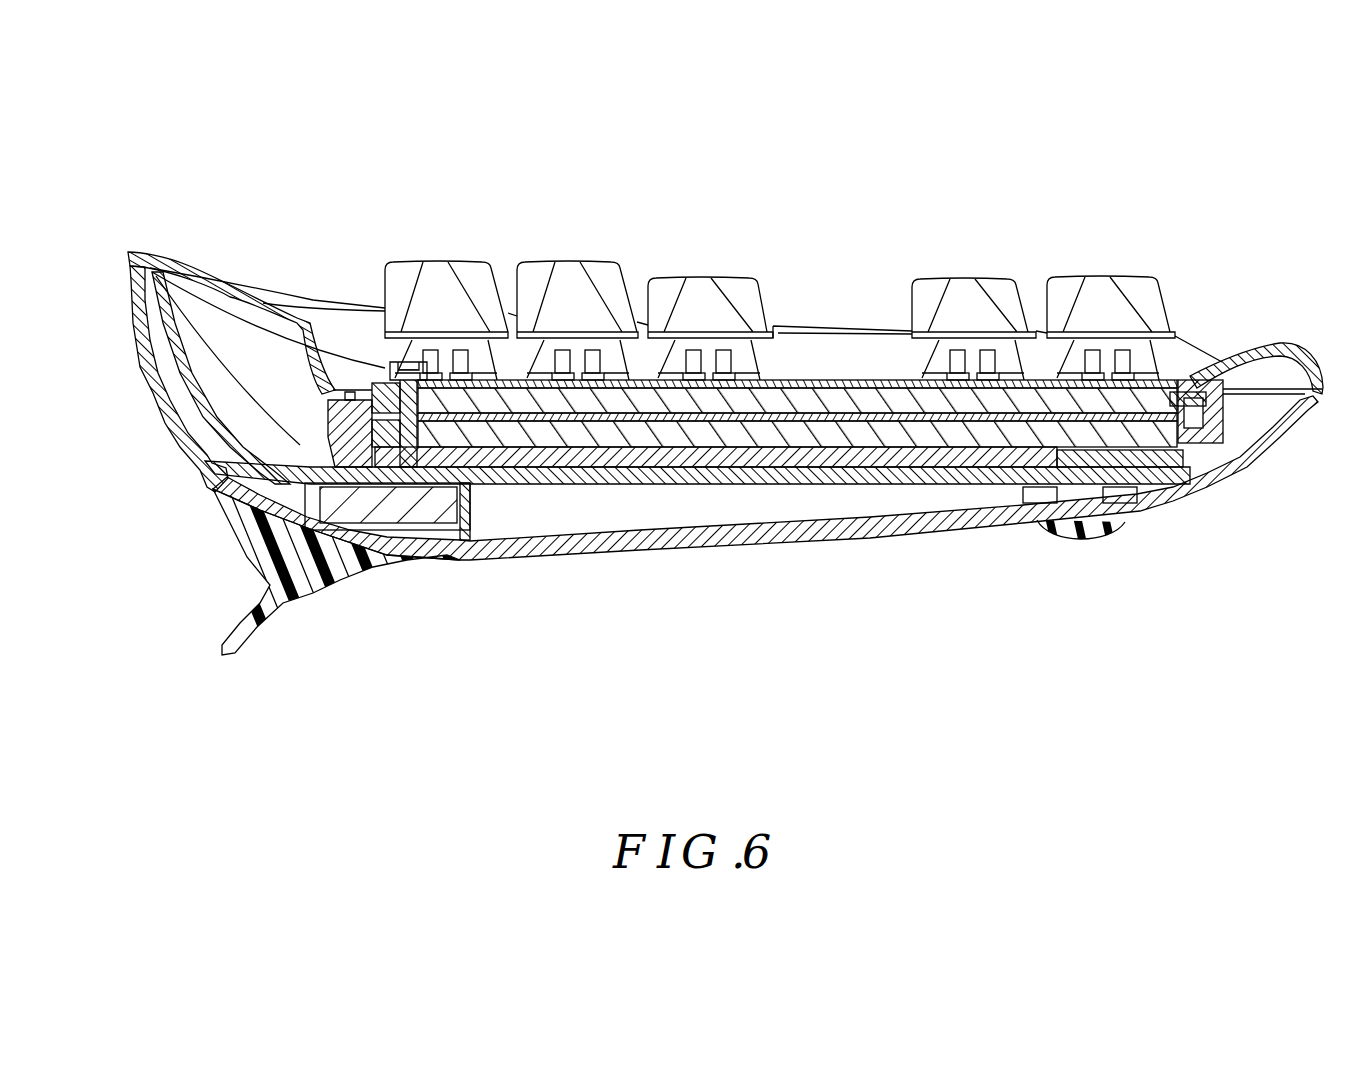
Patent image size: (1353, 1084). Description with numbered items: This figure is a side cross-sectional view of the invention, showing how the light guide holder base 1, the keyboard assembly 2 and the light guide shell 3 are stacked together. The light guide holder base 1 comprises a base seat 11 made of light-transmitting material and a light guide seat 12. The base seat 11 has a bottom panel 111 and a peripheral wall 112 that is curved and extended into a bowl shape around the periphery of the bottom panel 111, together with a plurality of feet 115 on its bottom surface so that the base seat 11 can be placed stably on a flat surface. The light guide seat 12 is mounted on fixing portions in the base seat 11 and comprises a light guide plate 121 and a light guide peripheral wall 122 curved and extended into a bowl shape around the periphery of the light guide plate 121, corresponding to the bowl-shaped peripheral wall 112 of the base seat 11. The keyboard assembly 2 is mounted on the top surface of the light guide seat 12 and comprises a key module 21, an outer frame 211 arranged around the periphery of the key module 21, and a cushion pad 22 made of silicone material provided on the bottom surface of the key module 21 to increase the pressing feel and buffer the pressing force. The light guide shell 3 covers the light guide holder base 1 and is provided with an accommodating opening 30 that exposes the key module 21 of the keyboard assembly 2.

The light guide holder base 1 is at (670, 706).
The base seat 11 is at (645, 628).
The bottom panel 111 is at (643, 537).
The peripheral wall 112 is at (142, 365).
The feet 115 is at (267, 598).
The light guide seat 12 is at (572, 628).
The light guide plate 121 is at (557, 480).
The light guide peripheral wall 122 is at (218, 345).
The keyboard assembly 2 is at (716, 201).
The key module 21 is at (705, 300).
The outer frame 211 is at (1220, 420).
The cushion pad 22 is at (778, 452).
The light guide shell 3 is at (312, 318).
The accommodating opening 30 is at (1185, 378).